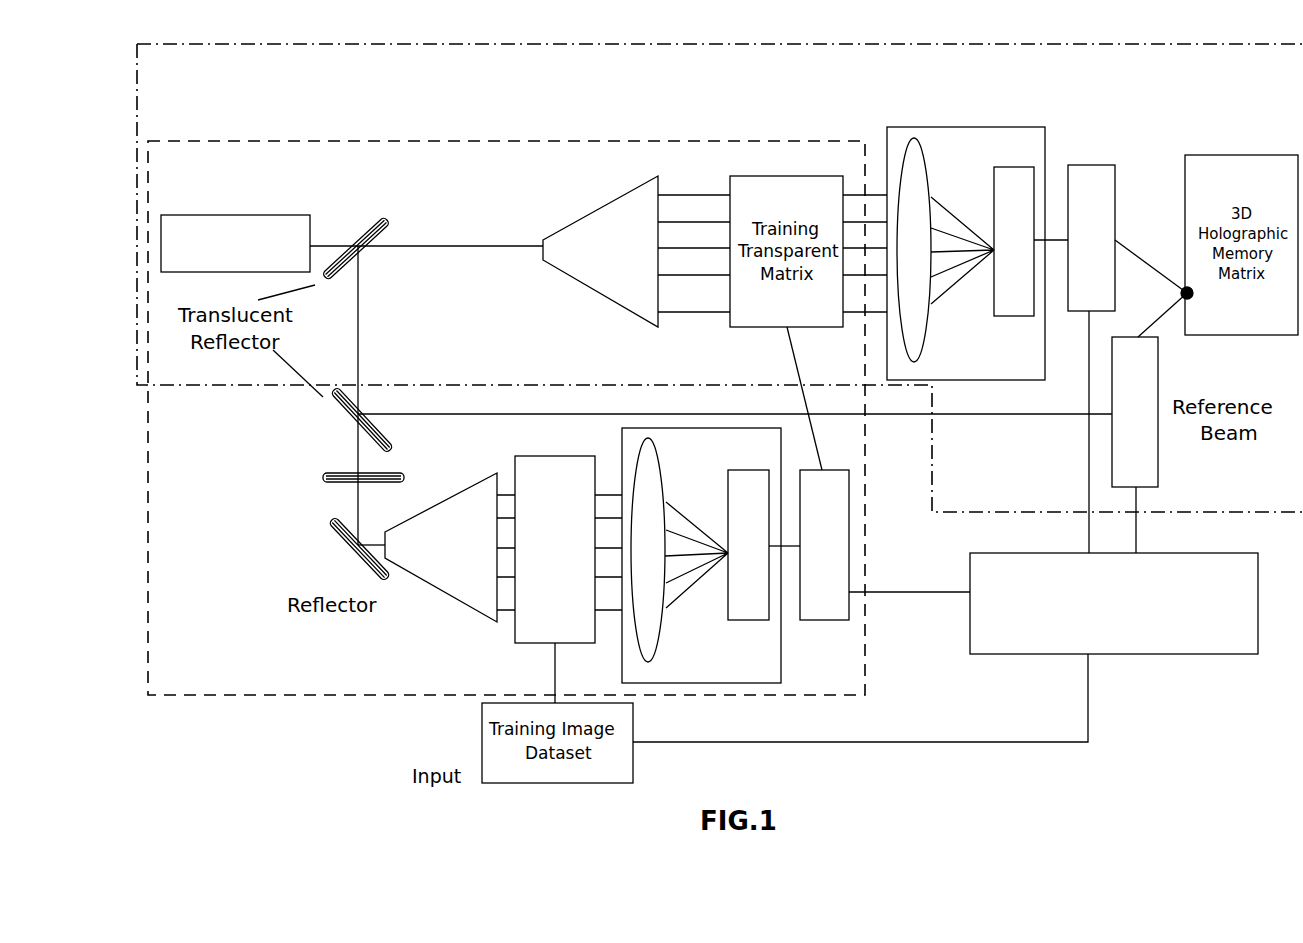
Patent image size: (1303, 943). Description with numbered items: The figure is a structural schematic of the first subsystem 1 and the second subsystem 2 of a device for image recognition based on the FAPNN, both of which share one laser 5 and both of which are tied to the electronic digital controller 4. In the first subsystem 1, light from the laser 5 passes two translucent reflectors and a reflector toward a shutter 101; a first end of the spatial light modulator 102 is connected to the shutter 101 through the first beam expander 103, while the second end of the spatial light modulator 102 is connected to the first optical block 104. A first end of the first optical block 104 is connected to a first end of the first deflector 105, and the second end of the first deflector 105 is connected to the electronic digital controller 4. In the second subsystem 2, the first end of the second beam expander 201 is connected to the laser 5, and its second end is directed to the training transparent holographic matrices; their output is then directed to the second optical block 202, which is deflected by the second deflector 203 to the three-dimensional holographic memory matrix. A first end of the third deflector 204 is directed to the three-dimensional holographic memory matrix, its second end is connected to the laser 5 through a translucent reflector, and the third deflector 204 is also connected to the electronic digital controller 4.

The first subsystem 1 is at (506, 418).
The second subsystem 2 is at (720, 278).
The electronic digital controller 4 is at (1114, 603).
The laser 5 is at (235, 243).
The shutter 101 is at (323, 478).
The spatial light modulator 102 is at (555, 549).
The first beam expander 103 is at (438, 500).
The first optical block 104 is at (701, 555).
The first deflector 105 is at (824, 545).
The second beam expander 201 is at (560, 288).
The second optical block 202 is at (966, 253).
The second deflector 203 is at (1091, 238).
The third deflector 204 is at (1135, 412).